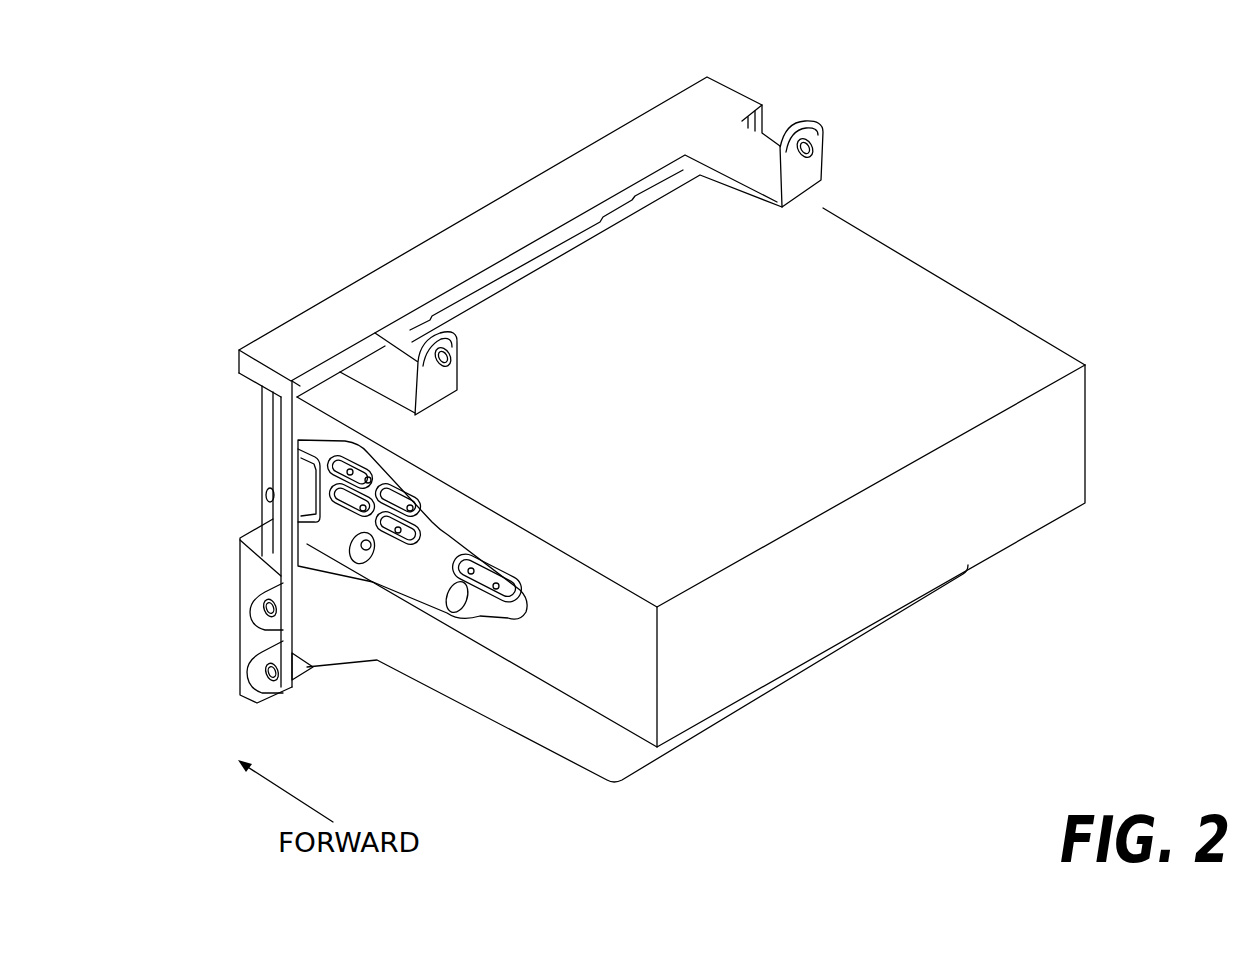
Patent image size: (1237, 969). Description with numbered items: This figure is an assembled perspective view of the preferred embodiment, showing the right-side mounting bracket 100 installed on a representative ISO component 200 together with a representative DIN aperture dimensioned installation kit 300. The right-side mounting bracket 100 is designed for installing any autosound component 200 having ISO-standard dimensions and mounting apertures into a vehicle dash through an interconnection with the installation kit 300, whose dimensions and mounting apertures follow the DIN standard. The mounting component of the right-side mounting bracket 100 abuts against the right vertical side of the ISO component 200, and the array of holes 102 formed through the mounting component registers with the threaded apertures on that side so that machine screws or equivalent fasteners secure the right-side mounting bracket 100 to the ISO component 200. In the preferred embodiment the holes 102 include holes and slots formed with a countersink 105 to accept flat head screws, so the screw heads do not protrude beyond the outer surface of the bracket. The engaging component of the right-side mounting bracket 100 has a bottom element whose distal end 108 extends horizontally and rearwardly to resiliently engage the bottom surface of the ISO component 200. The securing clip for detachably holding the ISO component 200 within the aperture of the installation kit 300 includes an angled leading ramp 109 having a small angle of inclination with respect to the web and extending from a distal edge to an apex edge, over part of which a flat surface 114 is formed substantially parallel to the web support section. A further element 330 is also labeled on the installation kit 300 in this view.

The right-side mounting bracket 100 is at (364, 551).
The holes 102 is at (371, 562).
The countersink 105 is at (483, 569).
The distal end 108 is at (300, 387).
The leading ramp 109 is at (306, 503).
The flat surface 114 is at (291, 484).
The ISO component 200 is at (701, 390).
The installation kit 300 is at (592, 200).
The mounting flange 330 is at (242, 550).